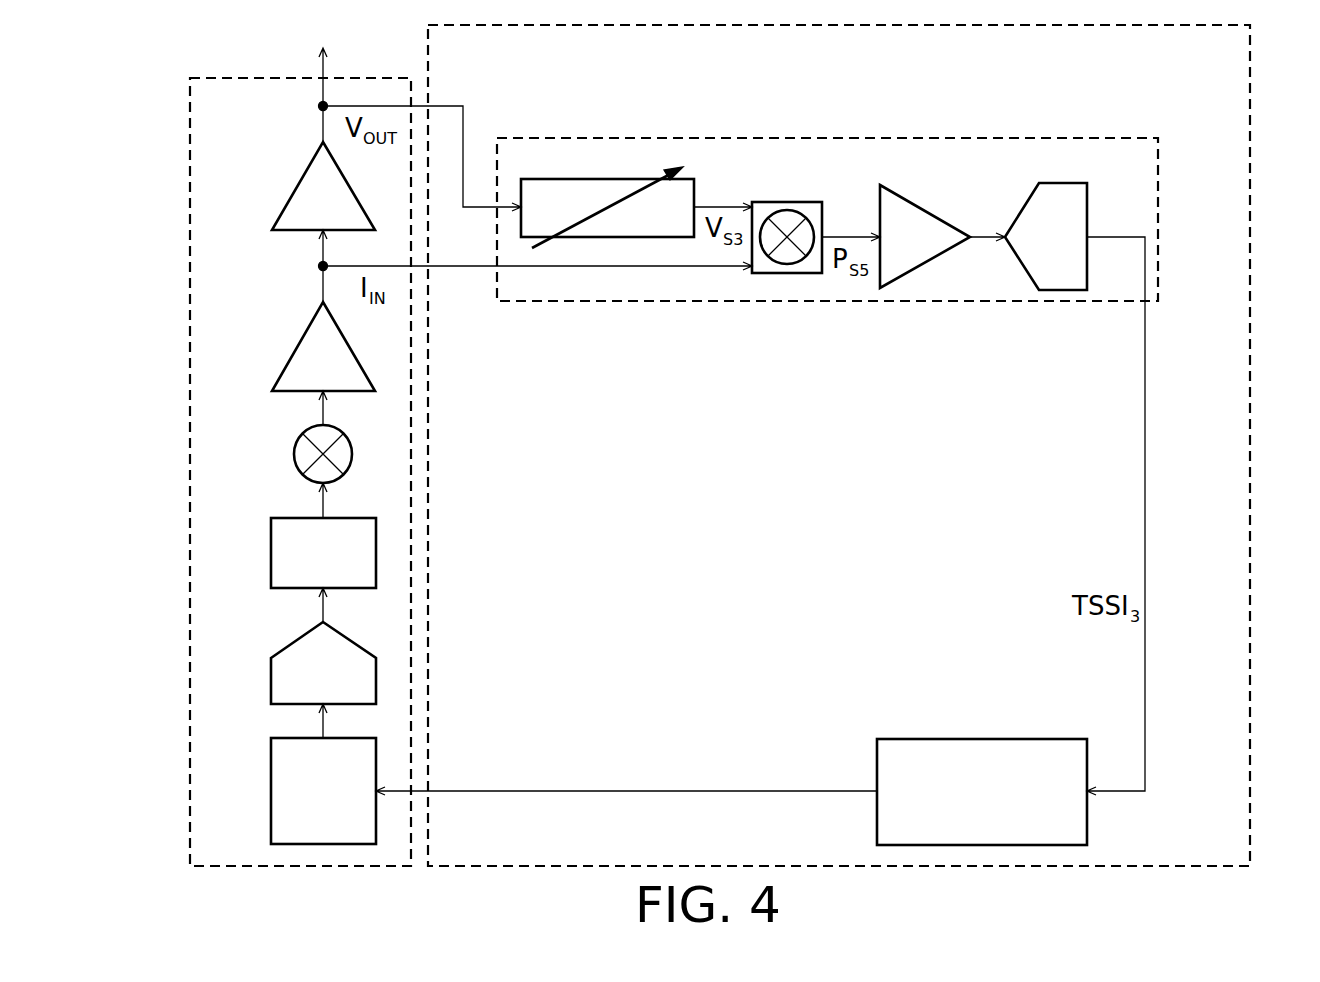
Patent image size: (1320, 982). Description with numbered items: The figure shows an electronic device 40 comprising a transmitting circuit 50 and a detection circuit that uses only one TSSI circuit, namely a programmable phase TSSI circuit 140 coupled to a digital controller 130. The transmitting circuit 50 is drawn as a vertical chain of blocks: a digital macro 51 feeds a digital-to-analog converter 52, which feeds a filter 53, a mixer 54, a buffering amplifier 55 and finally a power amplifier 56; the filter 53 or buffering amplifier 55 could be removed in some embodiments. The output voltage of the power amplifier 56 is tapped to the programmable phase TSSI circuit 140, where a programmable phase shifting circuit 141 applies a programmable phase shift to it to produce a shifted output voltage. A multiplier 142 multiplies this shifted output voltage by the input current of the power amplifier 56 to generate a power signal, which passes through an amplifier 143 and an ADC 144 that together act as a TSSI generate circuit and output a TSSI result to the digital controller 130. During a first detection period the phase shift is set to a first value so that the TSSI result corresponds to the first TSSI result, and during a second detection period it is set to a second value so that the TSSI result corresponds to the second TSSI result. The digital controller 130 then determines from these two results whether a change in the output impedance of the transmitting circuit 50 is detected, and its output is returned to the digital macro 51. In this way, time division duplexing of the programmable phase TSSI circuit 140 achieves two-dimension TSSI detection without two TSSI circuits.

The electronic device 40 is at (145, 63).
The transmitting circuit 50 is at (190, 478).
The digital macro 51 is at (271, 789).
The digital-to-analog converter 52 is at (271, 677).
The filter 53 is at (271, 550).
The mixer 54 is at (293, 450).
The buffering amplifier 55 is at (293, 343).
The power amplifier 56 is at (293, 185).
The digital controller 130 is at (983, 739).
The programmable phase TSSI circuit 140 is at (1160, 193).
The programmable phase shifting circuit 141 is at (607, 178).
The multiplier 142 is at (787, 202).
The amplifier 143 is at (924, 211).
The ADC 144 is at (1064, 183).